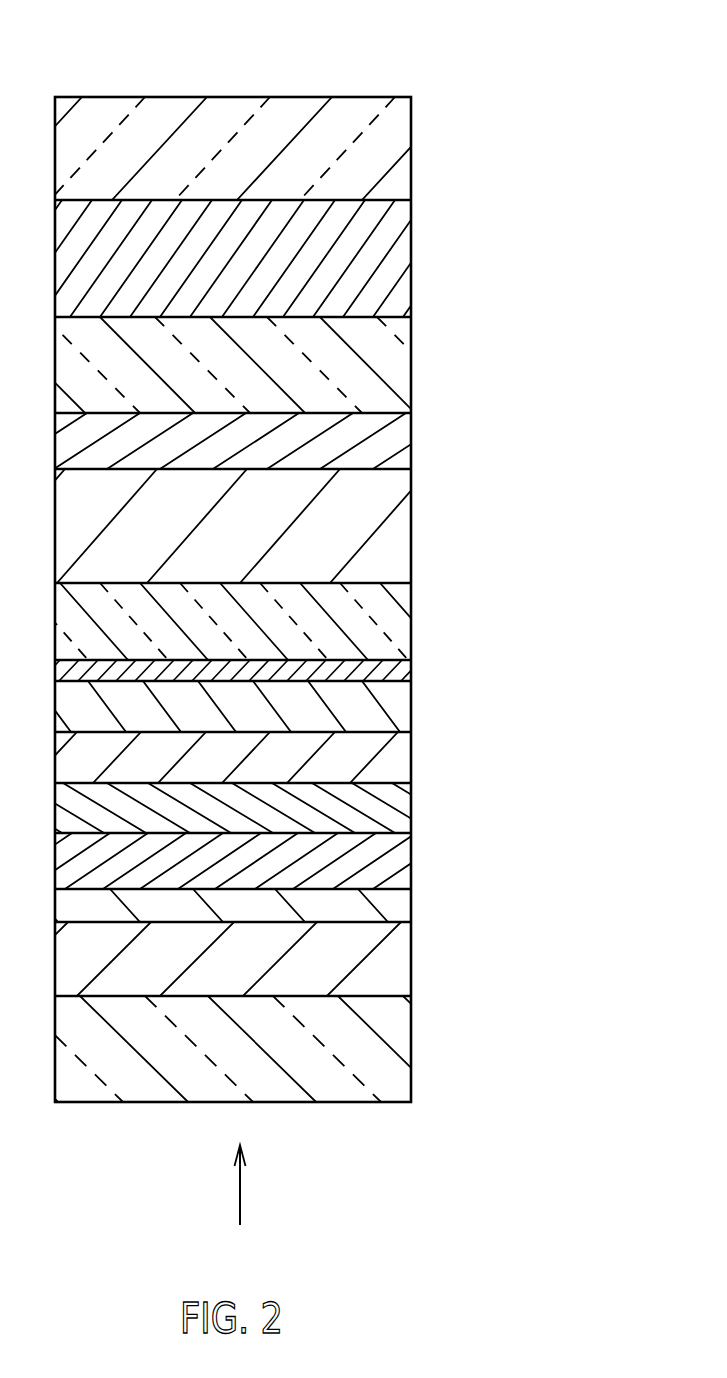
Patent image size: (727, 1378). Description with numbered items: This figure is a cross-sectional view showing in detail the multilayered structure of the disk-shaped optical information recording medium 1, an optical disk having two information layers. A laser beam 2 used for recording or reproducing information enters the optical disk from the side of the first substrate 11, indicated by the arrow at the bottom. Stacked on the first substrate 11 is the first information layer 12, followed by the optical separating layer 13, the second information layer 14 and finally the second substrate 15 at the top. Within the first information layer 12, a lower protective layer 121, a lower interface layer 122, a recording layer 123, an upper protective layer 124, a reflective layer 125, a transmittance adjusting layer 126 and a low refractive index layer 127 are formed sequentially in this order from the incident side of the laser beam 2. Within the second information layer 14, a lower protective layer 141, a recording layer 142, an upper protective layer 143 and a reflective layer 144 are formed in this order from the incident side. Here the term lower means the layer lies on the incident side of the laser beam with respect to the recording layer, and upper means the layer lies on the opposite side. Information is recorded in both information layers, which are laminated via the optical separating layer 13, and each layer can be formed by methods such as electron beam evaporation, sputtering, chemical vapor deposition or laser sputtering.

The optical information recording medium 1 is at (296, 88).
The laser beam 2 is at (240, 1193).
The first substrate 11 is at (405, 1043).
The first information layer 12 is at (296, 814).
The lower protective layer 121 is at (257, 959).
The lower interface layer 122 is at (405, 902).
The recording layer 123 is at (405, 855).
The upper protective layer 124 is at (405, 805).
The reflective layer 125 is at (405, 752).
The transmittance adjusting layer 126 is at (405, 703).
The low refractive index layer 127 is at (405, 665).
The optical separating layer 13 is at (405, 615).
The second information layer 14 is at (294, 389).
The lower protective layer 141 is at (257, 526).
The recording layer 142 is at (405, 437).
The upper protective layer 143 is at (405, 360).
The reflective layer 144 is at (405, 258).
The second substrate 15 is at (403, 147).